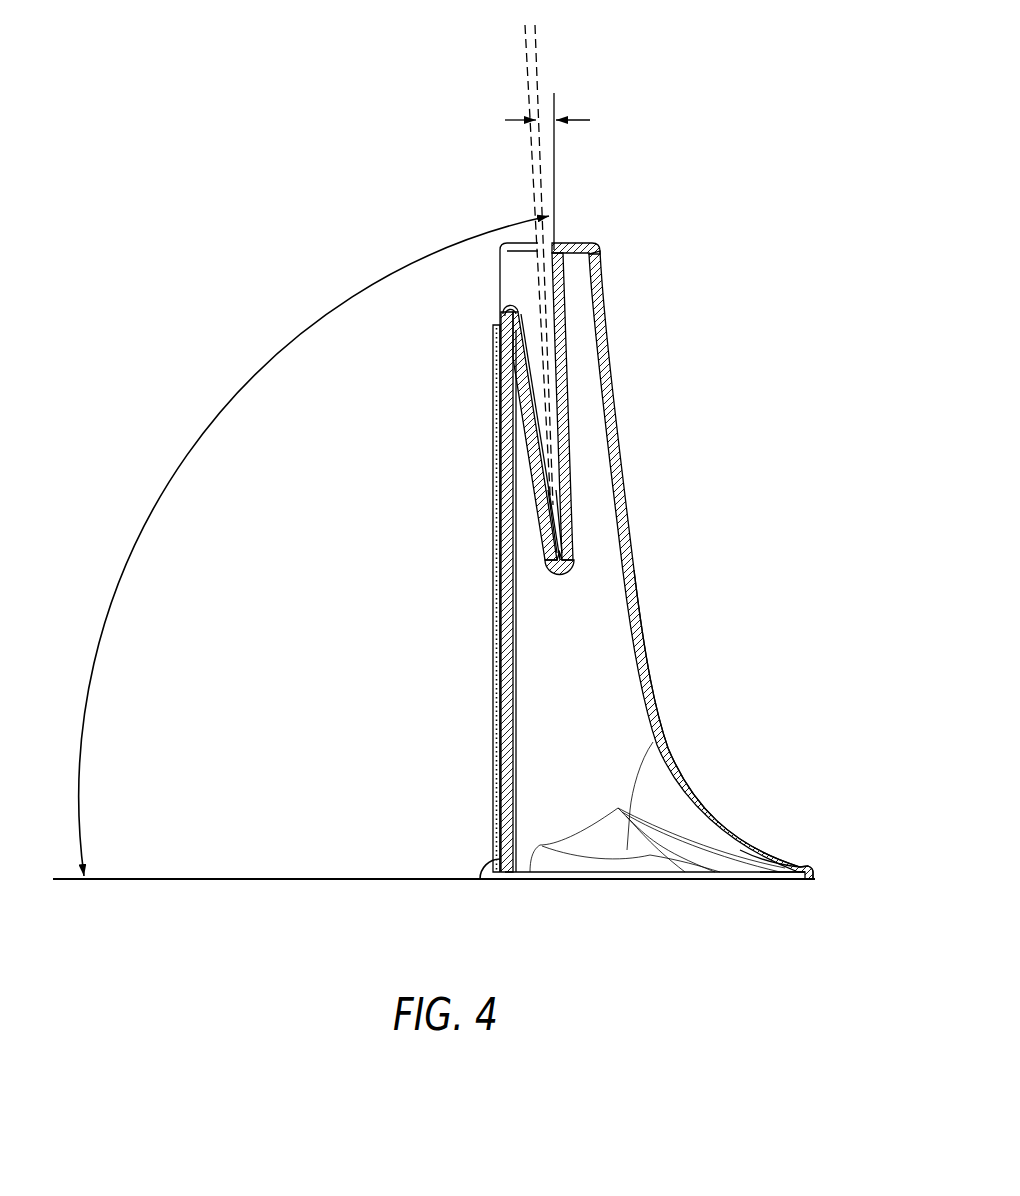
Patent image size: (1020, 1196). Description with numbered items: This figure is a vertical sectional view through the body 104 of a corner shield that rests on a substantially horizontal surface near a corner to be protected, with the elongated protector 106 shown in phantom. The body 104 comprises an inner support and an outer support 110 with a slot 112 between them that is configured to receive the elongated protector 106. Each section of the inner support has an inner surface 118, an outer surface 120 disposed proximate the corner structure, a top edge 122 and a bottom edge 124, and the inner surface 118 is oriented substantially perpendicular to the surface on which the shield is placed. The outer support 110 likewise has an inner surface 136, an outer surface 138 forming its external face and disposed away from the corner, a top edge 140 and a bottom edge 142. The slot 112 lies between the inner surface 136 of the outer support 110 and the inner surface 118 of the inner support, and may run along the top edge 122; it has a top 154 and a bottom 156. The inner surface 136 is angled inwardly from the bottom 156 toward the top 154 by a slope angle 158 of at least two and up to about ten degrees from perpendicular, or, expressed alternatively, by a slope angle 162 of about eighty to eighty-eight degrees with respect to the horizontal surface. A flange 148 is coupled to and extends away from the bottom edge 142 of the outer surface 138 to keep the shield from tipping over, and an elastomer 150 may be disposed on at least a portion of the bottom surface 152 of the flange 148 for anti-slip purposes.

The body 104 is at (610, 579).
The elongated protector 106 is at (542, 57).
The outer support 110 is at (598, 420).
The slot 112 is at (535, 372).
The inner surface 118 is at (540, 437).
The outer surface 120 is at (497, 331).
The top edge 122 is at (504, 301).
The bottom edge 124 is at (493, 873).
The inner surface 136 is at (566, 366).
The outer surface 138 is at (648, 636).
The top edge 140 is at (594, 244).
The bottom edge 142 is at (691, 811).
The flange 148 is at (769, 859).
The elastomer 150 is at (607, 882).
The bottom surface 152 is at (770, 882).
The top 154 is at (530, 293).
The bottom 156 is at (560, 512).
The slope angle 158 is at (579, 124).
The slope angle 162 is at (343, 301).